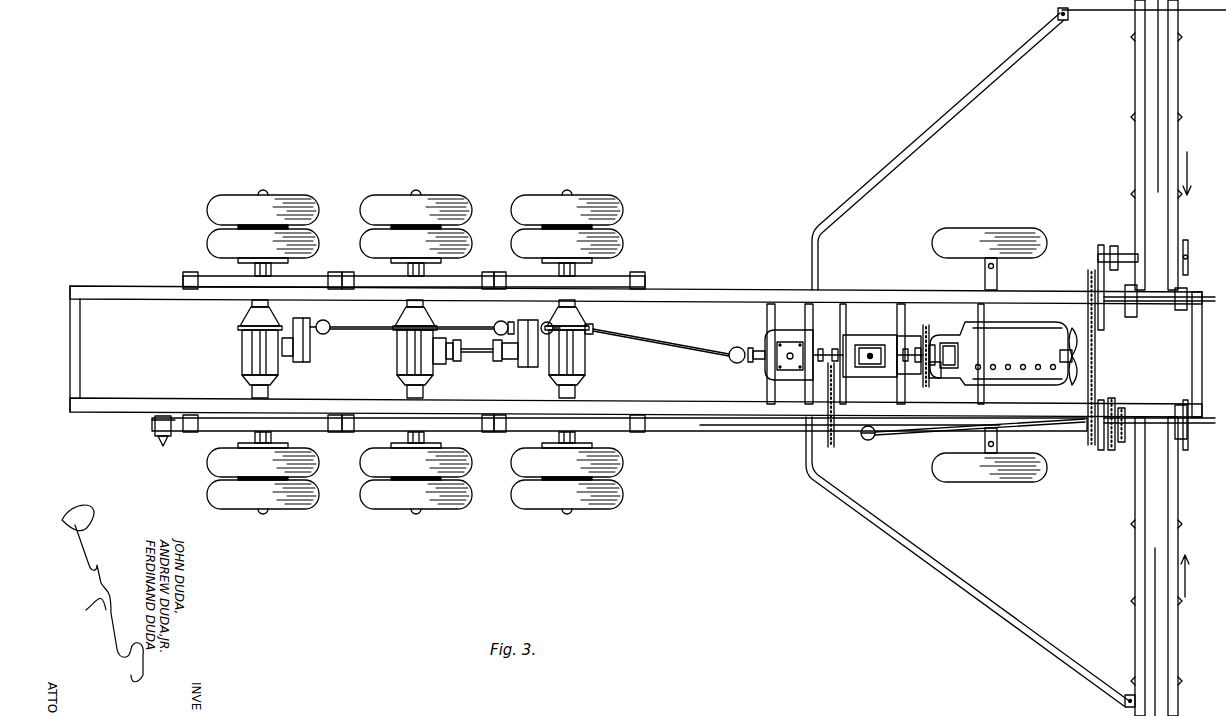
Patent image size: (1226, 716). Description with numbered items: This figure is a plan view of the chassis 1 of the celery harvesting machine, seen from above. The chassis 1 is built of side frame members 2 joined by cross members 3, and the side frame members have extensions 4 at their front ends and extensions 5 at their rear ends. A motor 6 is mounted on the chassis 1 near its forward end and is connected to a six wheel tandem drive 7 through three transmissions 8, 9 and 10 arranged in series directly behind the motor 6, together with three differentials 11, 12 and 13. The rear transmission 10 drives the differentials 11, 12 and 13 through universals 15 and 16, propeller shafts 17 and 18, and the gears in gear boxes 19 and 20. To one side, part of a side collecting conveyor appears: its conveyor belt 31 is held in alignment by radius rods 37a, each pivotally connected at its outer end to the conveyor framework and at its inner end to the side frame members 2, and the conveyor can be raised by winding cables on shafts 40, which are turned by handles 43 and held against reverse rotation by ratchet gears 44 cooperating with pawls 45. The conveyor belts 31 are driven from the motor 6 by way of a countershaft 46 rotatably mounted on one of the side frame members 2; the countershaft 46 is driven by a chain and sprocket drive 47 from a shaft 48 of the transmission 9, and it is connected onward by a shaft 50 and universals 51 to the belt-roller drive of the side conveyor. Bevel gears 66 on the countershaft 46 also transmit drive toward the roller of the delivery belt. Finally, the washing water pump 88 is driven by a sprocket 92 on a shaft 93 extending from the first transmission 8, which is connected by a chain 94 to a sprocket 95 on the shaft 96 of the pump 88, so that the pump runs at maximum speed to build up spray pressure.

The chassis 1 is at (845, 282).
The side frame members 2 is at (690, 291).
The cross members 3 is at (70, 292).
The front extensions 4 is at (1132, 316).
The rear extensions 5 is at (140, 300).
The motor 6 is at (1040, 380).
The six wheel tandem drive 7 is at (397, 361).
The first transmission 8 is at (975, 338).
The second transmission 9 is at (853, 337).
The rear transmission 10 is at (782, 330).
The differential 11 is at (552, 366).
The differential 12 is at (440, 375).
The differential 13 is at (283, 372).
The universal 15 is at (604, 320).
The universal 16 is at (324, 335).
The propeller shaft 17 is at (676, 344).
The propeller shaft 18 is at (362, 326).
The gear box 19 is at (524, 326).
The gear box 20 is at (302, 318).
The conveyor belt 31 is at (1163, 142).
The radius rods 37a is at (935, 154).
The shafts 40 is at (1168, 305).
The handles 43 is at (1195, 300).
The ratchet gears 44 is at (1182, 298).
The pawls 45 is at (1189, 258).
The countershaft 46 is at (728, 433).
The chain and sprocket drive 47 is at (827, 440).
The shaft 48 is at (840, 380).
The shaft 50 is at (925, 436).
The universals 51 is at (867, 441).
The bevel gears 66 is at (165, 441).
The pump 88 is at (904, 336).
The sprocket 92 is at (1085, 404).
The shaft 93 is at (938, 382).
The chain 94 is at (935, 340).
The sprocket 95 is at (930, 350).
The shaft 96 is at (924, 325).